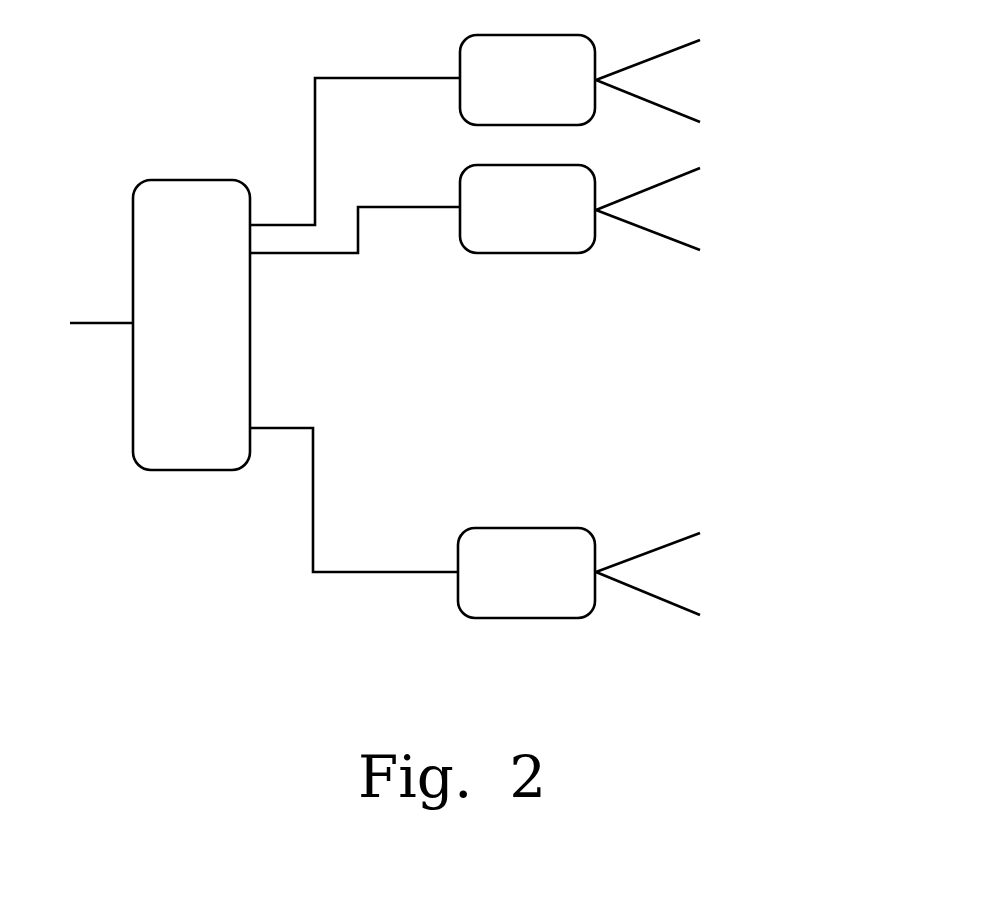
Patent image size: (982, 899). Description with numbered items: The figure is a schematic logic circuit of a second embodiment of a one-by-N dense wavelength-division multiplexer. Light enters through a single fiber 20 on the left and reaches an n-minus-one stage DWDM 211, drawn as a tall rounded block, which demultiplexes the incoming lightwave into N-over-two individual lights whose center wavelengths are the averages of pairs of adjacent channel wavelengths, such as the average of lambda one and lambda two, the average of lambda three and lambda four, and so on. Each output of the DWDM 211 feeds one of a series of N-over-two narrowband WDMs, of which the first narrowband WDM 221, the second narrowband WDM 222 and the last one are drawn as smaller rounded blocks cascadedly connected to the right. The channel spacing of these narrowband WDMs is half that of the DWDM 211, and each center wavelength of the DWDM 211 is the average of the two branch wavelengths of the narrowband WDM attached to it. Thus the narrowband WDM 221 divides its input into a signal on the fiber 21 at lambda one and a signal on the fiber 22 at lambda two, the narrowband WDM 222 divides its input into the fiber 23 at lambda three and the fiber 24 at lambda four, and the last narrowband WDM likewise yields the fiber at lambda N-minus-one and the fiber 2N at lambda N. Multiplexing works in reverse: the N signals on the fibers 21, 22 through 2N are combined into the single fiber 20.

The fiber 20 is at (81, 326).
The n−1 stage DWDM 211 is at (159, 325).
The narrowband WDM 221 is at (422, 129).
The narrowband WDM 222 is at (422, 208).
The fiber 21 is at (698, 51).
The fiber 22 is at (698, 114).
The fiber 23 is at (698, 181).
The fiber 24 is at (698, 244).
The fiber 2N is at (700, 606).